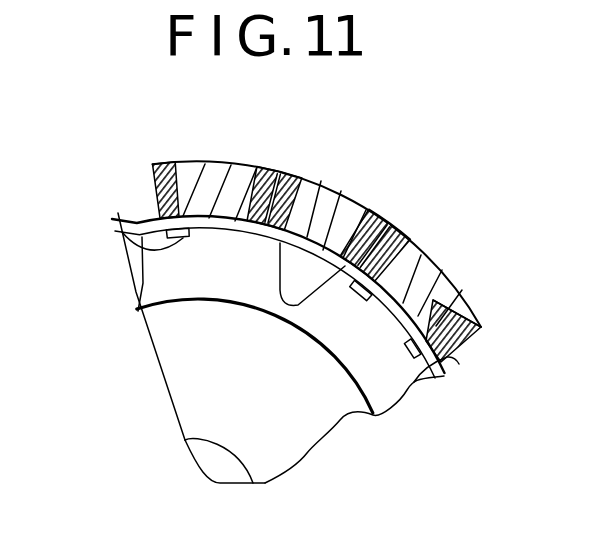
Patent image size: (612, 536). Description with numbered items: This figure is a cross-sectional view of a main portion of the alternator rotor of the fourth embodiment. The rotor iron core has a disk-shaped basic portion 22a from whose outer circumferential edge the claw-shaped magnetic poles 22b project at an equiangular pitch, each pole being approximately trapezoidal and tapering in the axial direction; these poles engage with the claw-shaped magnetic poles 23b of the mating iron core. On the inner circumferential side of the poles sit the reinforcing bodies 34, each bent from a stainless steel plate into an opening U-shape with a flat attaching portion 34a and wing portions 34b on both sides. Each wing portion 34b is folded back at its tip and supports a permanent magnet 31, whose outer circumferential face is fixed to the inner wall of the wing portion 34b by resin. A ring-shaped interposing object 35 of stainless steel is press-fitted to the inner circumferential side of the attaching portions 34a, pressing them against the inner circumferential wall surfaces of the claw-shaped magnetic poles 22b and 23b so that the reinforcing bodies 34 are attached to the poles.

The basic portion 22a is at (167, 331).
The claw-shaped magnetic pole 22b is at (222, 174).
The claw-shaped magnetic pole 23b is at (348, 208).
The permanent magnet 31 is at (388, 218).
The reinforcing body 34 is at (406, 238).
The attaching portion 34a is at (254, 278).
The wing portion 34b is at (152, 170).
The interposing object 35 is at (414, 393).